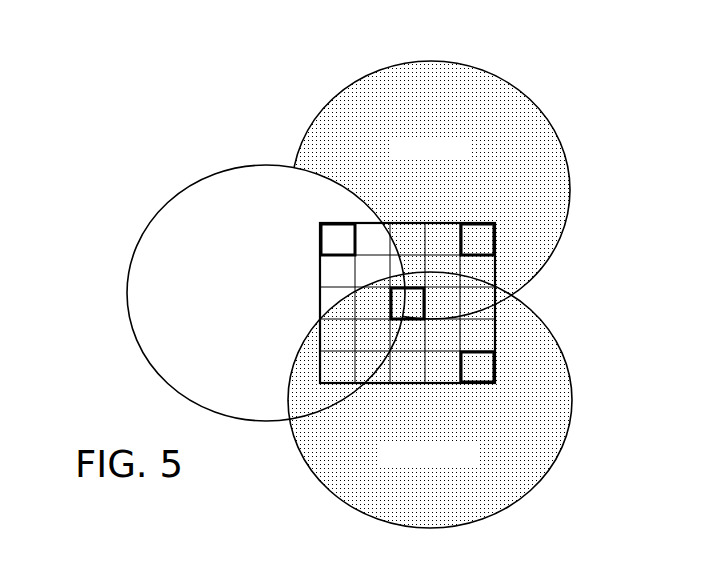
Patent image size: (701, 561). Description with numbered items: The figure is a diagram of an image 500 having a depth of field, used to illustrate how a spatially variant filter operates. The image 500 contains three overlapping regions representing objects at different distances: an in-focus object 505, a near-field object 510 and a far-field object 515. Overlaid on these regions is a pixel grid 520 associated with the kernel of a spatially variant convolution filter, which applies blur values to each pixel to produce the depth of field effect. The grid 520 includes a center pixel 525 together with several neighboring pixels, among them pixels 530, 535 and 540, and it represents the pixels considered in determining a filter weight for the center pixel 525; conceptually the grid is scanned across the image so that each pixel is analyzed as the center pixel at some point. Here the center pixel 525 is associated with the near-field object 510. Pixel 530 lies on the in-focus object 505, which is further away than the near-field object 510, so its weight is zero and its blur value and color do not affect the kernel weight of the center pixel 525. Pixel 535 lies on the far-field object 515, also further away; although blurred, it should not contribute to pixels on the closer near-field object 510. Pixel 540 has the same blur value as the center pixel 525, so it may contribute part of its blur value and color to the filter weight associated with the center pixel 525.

The image 500 is at (101, 112).
The in-focus object 505 is at (162, 243).
The near-field object 510 is at (523, 478).
The far-field object 515 is at (383, 82).
The pixel grid 520 is at (320, 317).
The center pixel 525 is at (427, 300).
The pixel 530 is at (318, 225).
The pixel 535 is at (478, 223).
The pixel 540 is at (496, 368).